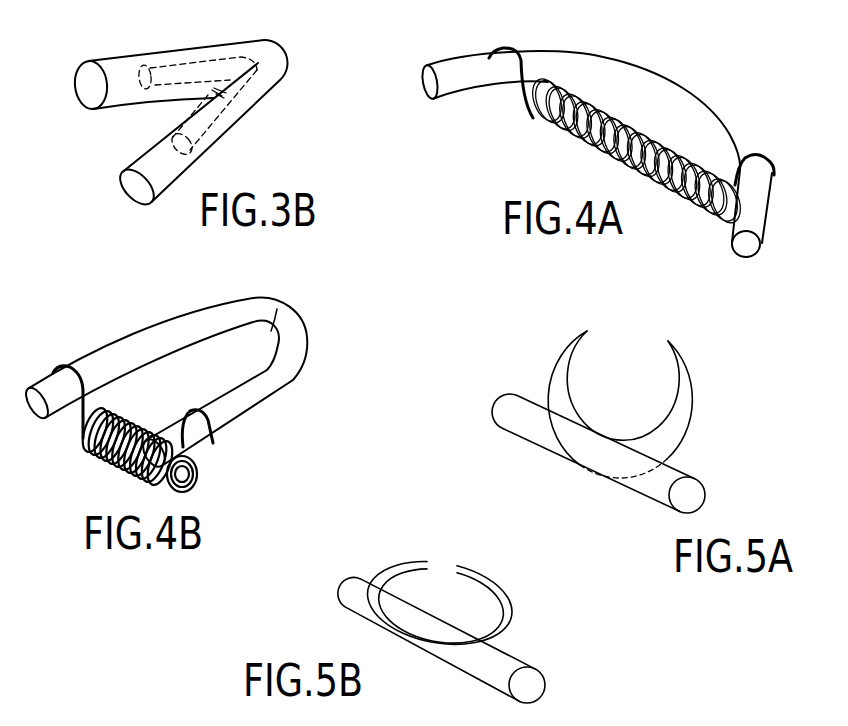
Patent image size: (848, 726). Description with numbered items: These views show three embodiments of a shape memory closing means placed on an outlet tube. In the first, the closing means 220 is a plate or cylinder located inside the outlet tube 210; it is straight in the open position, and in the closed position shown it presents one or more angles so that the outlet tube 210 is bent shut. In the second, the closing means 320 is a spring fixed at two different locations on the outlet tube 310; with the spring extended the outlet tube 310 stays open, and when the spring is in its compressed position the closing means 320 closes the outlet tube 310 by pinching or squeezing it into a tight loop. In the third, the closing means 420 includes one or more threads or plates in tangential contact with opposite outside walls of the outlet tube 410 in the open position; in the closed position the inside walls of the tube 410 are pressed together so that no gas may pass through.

In FIG. 3B, the outlet tube 210 is at (143, 157).
In FIG. 3B, the closing means 220 is at (161, 65).
In FIG. 4A, the outlet tube 310 is at (677, 87).
In FIG. 4B, the outlet tube 310 is at (293, 325).
In FIG. 4A, the closing means 320 is at (573, 143).
In FIG. 4B, the closing means 320 is at (120, 462).
In FIG. 5A, the outlet tube 410 is at (677, 473).
In FIG. 5B, the outlet tube 410 is at (510, 657).
In FIG. 5A, the closing means 420 is at (687, 373).
In FIG. 5B, the closing means 420 is at (480, 570).